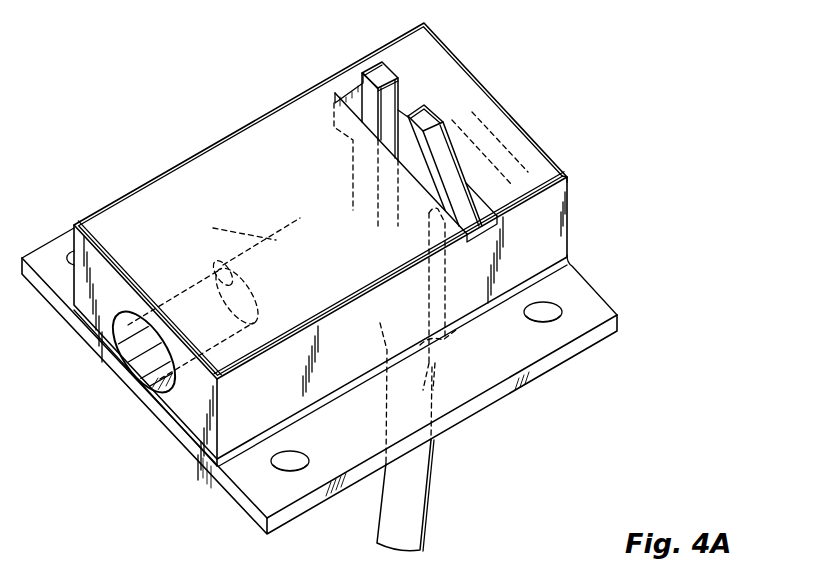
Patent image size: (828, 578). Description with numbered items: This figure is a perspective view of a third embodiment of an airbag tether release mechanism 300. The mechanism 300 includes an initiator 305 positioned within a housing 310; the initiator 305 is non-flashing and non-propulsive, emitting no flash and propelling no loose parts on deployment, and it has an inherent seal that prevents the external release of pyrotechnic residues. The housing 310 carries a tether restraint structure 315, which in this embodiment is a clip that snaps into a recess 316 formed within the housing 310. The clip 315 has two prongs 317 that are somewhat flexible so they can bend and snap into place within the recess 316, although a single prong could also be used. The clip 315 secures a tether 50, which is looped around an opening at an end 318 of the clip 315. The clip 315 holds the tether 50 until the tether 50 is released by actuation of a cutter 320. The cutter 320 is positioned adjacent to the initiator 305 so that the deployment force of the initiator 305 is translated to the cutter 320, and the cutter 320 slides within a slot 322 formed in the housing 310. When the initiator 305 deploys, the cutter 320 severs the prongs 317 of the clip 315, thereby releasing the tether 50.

The tether release mechanism 300 is at (553, 73).
The initiator 305 is at (263, 257).
The housing 310 is at (552, 228).
The tether restraint structure 315 is at (459, 320).
The recess 316 is at (336, 75).
The prongs 317 is at (440, 162).
The end of clip 318 is at (450, 357).
The cutter 320 is at (310, 195).
The slot 322 is at (572, 180).
The tether 50 is at (393, 524).